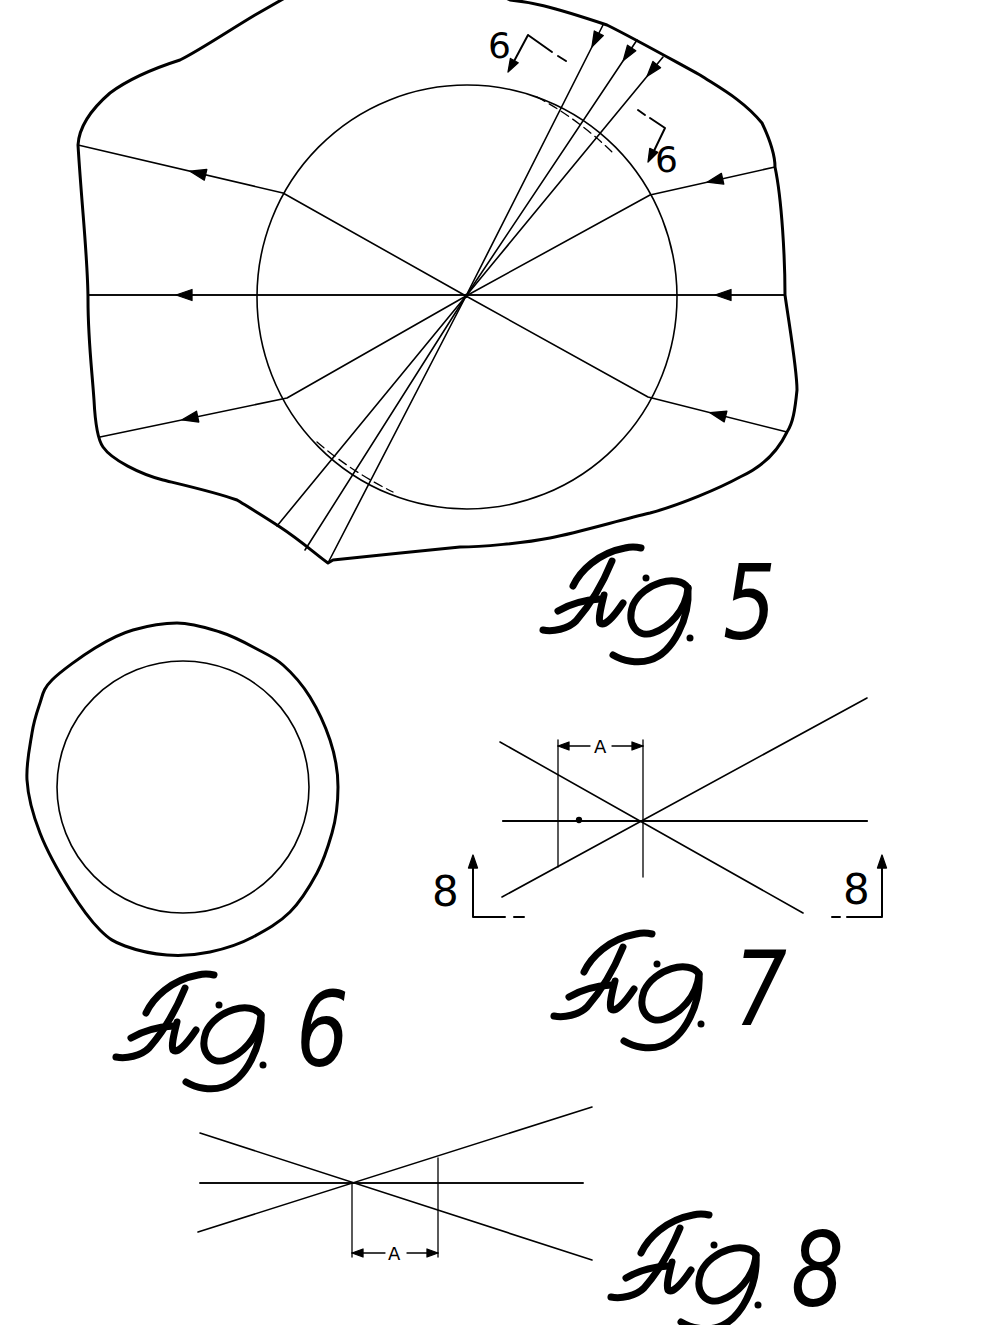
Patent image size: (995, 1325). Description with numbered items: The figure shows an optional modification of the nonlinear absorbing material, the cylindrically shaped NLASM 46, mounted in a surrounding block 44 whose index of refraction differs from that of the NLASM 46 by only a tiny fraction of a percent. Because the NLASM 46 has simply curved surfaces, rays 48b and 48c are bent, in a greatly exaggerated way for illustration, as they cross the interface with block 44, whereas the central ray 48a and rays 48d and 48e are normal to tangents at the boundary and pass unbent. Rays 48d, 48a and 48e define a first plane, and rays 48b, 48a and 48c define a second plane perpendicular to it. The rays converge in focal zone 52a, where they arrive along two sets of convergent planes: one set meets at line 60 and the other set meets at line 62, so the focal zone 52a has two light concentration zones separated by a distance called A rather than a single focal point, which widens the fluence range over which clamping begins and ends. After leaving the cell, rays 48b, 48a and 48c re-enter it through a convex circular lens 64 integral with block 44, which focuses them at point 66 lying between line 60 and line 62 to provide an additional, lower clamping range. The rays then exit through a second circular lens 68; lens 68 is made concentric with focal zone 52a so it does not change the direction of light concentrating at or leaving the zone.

In FIG. 5, the block 44 is at (157, 78).
In FIG. 6, the block 44 is at (87, 657).
In FIG. 5, the NLASM 46 is at (365, 100).
In FIG. 5, the light ray 48a is at (525, 202).
In FIG. 7, the light ray 48a is at (793, 820).
In FIG. 8, the light ray 48a is at (537, 1183).
In FIG. 5, the light ray 48b is at (538, 148).
In FIG. 7, the light ray 48b is at (765, 752).
In FIG. 8, the light ray 48b is at (537, 1183).
In FIG. 5, the light ray 48c is at (543, 198).
In FIG. 7, the light ray 48c is at (728, 870).
In FIG. 5, the light ray 48d is at (750, 295).
In FIG. 7, the light ray 48d is at (793, 820).
In FIG. 8, the light ray 48d is at (530, 1124).
In FIG. 5, the light ray 48e is at (750, 295).
In FIG. 7, the light ray 48e is at (793, 820).
In FIG. 8, the light ray 48e is at (547, 1244).
In FIG. 5, the focal zone 52a is at (466, 300).
In FIG. 6, the line 60 is at (292, 722).
In FIG. 7, the line 60 is at (644, 830).
In FIG. 8, the line 60 is at (440, 1196).
In FIG. 7, the line 62 is at (558, 800).
In FIG. 8, the line 62 is at (352, 1183).
In FIG. 5, the convex circular lens 64 is at (616, 117).
In FIG. 7, the point 66 is at (579, 822).
In FIG. 5, the second circular lens 68 is at (316, 447).